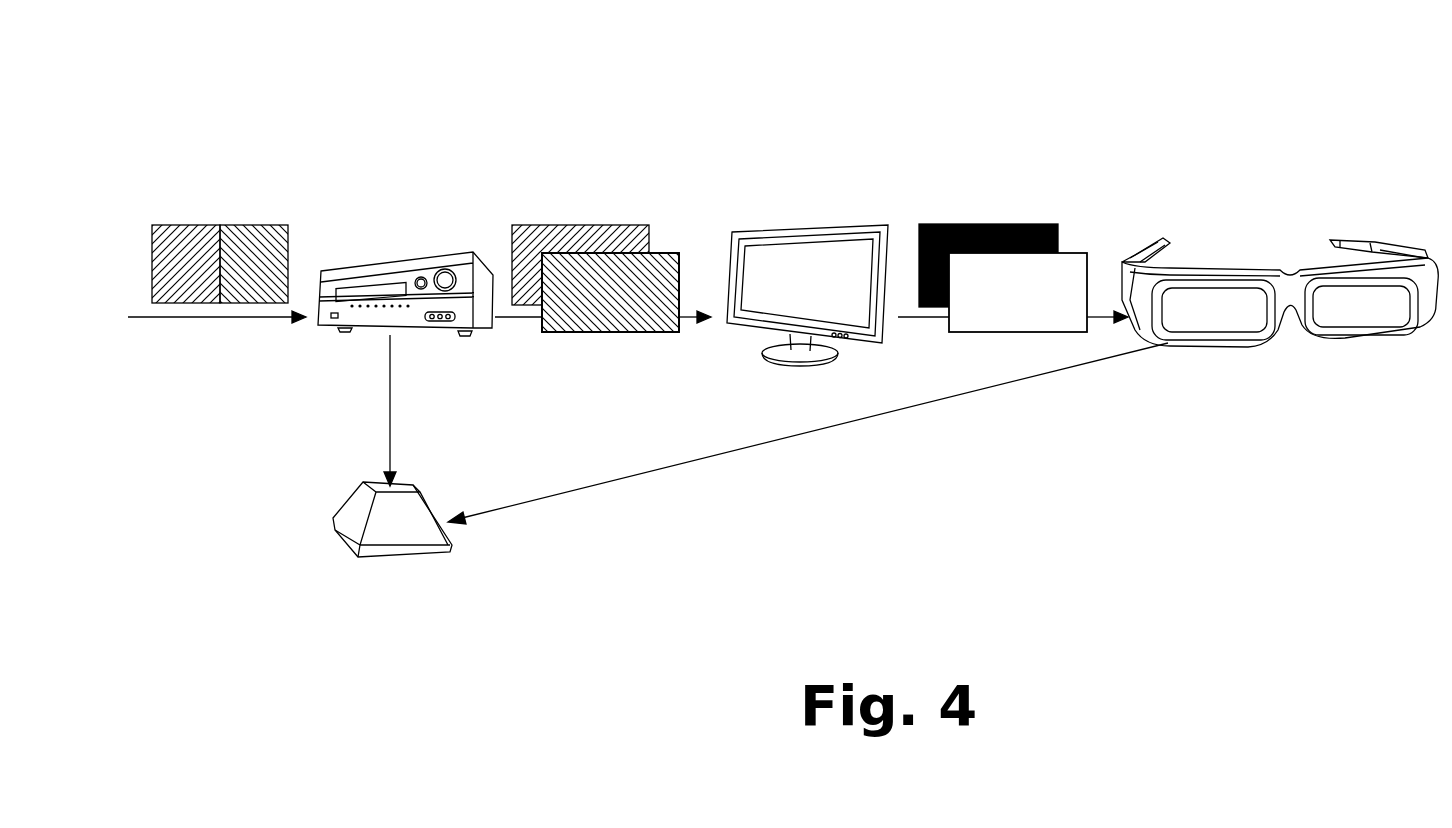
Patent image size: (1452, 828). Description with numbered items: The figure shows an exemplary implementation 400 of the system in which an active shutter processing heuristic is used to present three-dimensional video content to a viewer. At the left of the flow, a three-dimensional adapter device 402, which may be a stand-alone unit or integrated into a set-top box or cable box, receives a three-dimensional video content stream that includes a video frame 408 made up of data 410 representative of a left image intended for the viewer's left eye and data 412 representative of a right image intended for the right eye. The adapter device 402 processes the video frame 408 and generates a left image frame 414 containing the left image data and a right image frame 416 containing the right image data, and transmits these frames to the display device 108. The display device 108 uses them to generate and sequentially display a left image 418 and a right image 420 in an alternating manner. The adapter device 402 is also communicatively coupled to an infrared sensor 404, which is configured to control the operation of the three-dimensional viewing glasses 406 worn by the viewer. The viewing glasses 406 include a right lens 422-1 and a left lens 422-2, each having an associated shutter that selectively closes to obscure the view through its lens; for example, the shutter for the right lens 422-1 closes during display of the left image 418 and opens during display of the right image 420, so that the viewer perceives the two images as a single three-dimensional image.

The implementation 400 is at (270, 122).
The 3D adapter device 402 is at (398, 262).
The infrared sensor 404 is at (410, 557).
The 3D viewing glasses 406 is at (1280, 288).
The display device 108 is at (815, 228).
The video frame 408 is at (225, 253).
The data representative of a left image 410 is at (190, 303).
The data representative of a right image 412 is at (260, 303).
The left image frame 414 is at (585, 225).
The right image frame 416 is at (660, 253).
The left image 418 is at (997, 224).
The right image 420 is at (1070, 253).
The right lens 422-1 is at (1222, 325).
The left lens 422-2 is at (1362, 325).